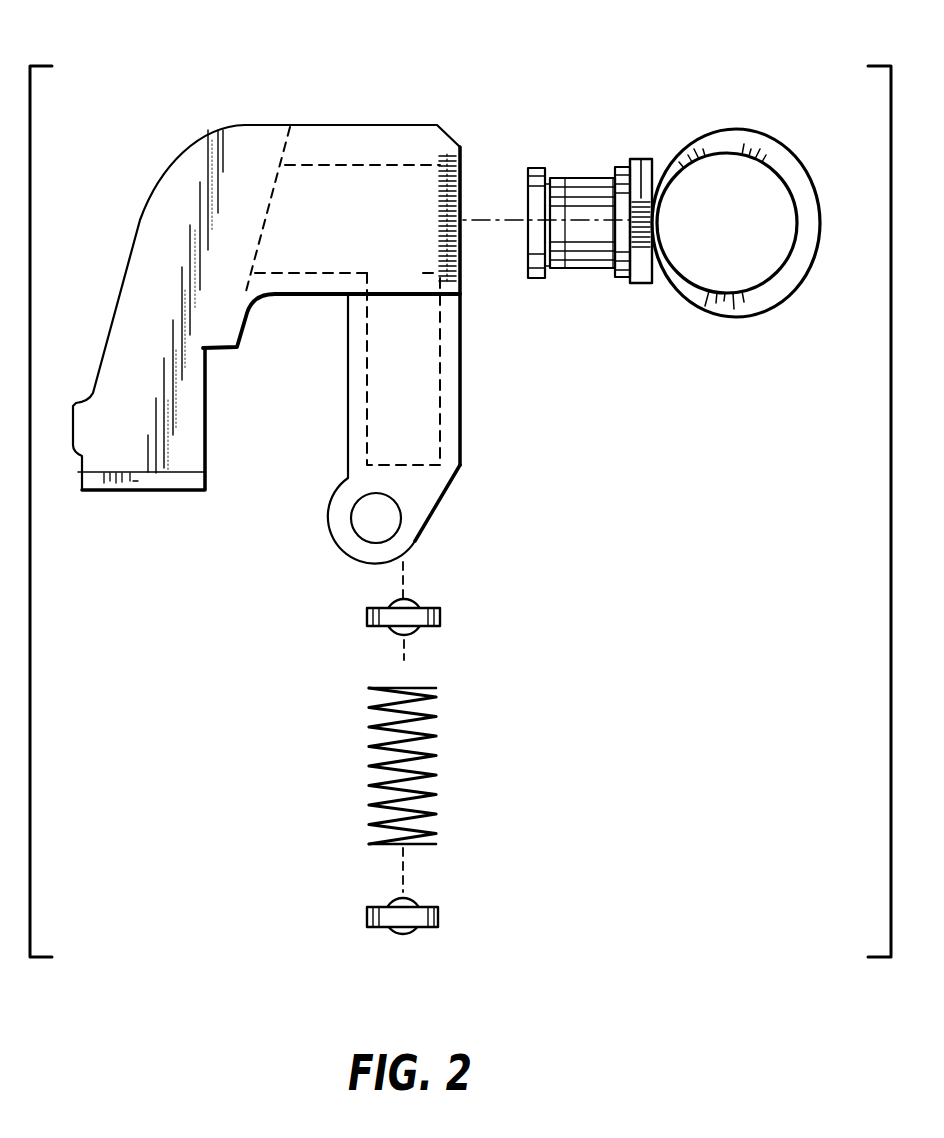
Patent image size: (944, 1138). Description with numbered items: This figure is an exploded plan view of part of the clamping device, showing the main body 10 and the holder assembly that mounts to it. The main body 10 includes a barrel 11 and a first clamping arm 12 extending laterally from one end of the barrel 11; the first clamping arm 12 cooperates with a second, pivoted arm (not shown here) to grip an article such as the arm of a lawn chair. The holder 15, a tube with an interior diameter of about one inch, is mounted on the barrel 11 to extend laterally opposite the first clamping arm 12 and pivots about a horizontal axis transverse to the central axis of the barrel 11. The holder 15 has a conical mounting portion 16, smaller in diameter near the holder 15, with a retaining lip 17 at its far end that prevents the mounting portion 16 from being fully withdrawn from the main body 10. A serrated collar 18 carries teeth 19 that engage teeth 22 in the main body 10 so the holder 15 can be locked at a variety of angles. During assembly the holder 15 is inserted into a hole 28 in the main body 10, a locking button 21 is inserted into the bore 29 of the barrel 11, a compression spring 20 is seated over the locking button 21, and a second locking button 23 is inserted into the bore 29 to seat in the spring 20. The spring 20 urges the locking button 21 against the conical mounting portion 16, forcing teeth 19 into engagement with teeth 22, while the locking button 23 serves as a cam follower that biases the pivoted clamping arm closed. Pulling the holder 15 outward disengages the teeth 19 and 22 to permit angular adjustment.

The main body 10 is at (425, 100).
The barrel 11 is at (420, 435).
The first clamping arm 12 is at (177, 180).
The holder 15 is at (775, 307).
The mounting portion 16 is at (558, 177).
The retaining lip 17 is at (535, 167).
The serrated collar 18 is at (635, 180).
The teeth 19 is at (642, 285).
The compression spring 20 is at (438, 714).
The locking button 21 is at (430, 607).
The teeth 22 is at (463, 175).
The locking button 23 is at (440, 916).
The hole 28 is at (384, 192).
The bore 29 is at (417, 383).